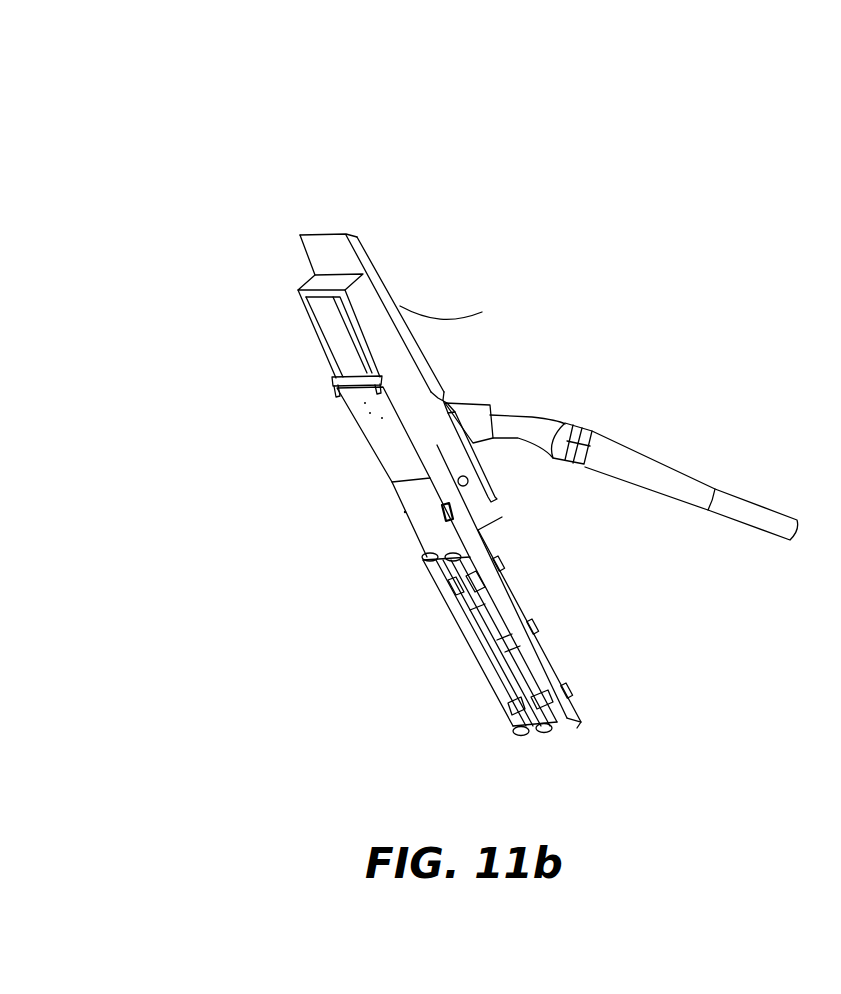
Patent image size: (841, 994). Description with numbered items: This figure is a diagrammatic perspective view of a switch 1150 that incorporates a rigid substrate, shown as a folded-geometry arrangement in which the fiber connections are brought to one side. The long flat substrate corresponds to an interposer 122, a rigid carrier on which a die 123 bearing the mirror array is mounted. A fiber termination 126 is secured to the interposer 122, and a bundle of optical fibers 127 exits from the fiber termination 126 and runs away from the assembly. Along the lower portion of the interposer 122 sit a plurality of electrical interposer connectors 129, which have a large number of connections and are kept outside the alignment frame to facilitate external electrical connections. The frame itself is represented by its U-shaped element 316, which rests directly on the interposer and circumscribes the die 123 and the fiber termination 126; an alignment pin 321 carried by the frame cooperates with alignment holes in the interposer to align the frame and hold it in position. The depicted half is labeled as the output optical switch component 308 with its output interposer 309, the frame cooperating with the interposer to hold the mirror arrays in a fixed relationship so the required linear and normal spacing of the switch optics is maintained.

The test assembly 1150 is at (642, 121).
The fiber termination 126 is at (476, 408).
The bundle of optical fibers 127 is at (752, 510).
The die 123 is at (373, 430).
The alignment pin 321 is at (442, 511).
The U-shaped element 316 is at (514, 519).
The interposer 122 is at (430, 520).
The output optical switch component 308 is at (586, 612).
The output interposer 309 is at (557, 683).
The electrical interposer connectors 129 is at (500, 707).